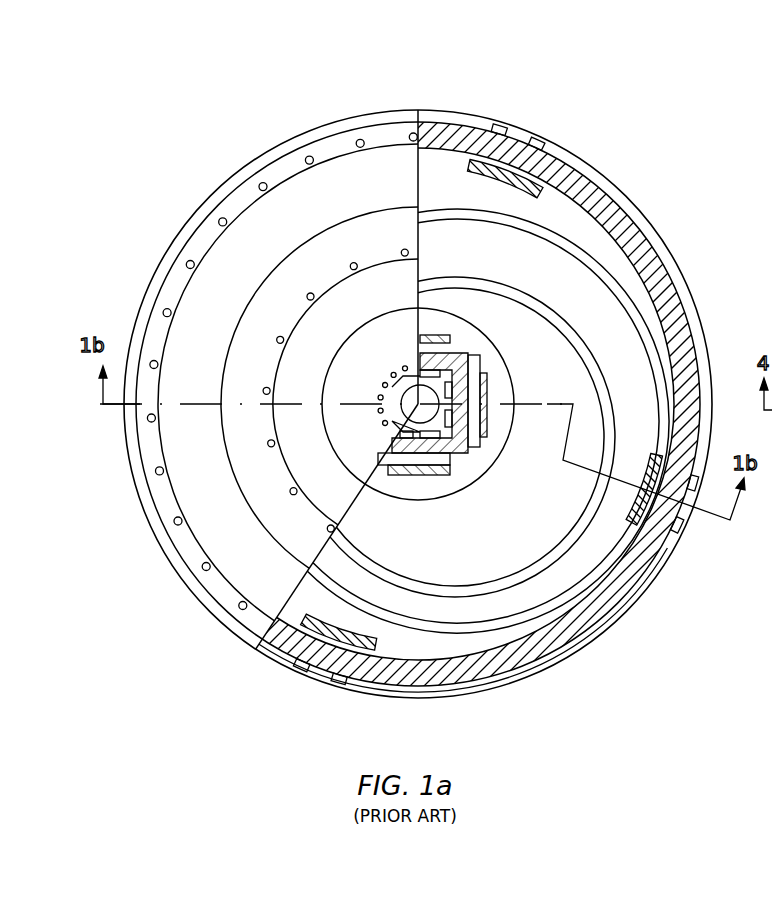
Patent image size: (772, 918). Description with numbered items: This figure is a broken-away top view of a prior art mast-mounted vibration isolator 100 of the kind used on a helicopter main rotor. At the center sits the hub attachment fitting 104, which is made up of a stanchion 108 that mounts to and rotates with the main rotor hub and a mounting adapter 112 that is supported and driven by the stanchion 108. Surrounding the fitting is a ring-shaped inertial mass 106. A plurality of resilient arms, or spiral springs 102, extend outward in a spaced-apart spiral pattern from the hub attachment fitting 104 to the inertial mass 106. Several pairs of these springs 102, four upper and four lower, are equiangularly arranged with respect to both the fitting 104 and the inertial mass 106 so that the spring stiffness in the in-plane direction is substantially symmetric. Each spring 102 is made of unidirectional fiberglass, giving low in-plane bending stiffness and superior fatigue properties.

The mast-mounted vibration isolator 100 is at (602, 132).
The resilient arms 102 is at (453, 157).
The hub attachment fitting 104 is at (473, 372).
The ring-shaped inertial mass 106 is at (252, 220).
The stanchion 108 is at (412, 397).
The mounting adapter 112 is at (463, 443).